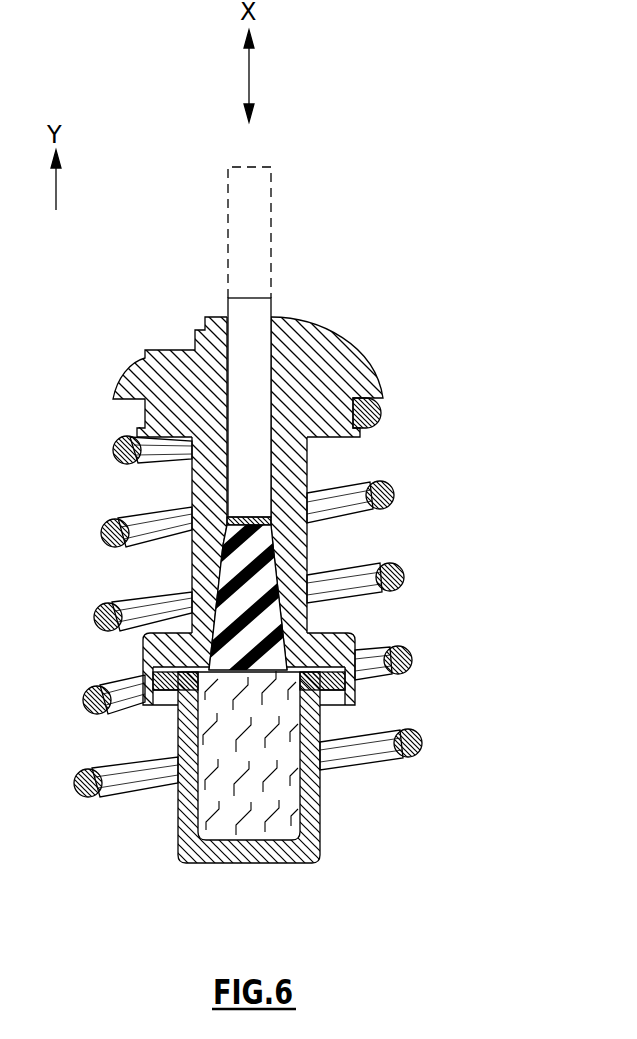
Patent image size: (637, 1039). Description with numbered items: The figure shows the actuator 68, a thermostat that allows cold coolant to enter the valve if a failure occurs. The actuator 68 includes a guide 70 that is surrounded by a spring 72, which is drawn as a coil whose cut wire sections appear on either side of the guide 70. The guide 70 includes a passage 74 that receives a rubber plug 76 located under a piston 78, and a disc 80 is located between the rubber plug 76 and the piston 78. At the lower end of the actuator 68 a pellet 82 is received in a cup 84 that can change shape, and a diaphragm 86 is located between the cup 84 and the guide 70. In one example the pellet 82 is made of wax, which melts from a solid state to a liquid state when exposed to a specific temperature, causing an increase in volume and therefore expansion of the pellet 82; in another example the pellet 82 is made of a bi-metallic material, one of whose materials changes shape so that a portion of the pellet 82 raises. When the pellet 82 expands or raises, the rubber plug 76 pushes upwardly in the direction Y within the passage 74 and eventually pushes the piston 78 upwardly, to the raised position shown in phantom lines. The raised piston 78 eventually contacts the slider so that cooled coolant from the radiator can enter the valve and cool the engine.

The actuator 68 is at (413, 202).
The guide 70 is at (338, 358).
The spring 72 is at (345, 507).
The passage 74 is at (263, 483).
The rubber plug 76 is at (270, 623).
The piston 78 is at (250, 195).
The disc 80 is at (240, 516).
The pellet 82 is at (293, 817).
The cup 84 is at (203, 817).
The diaphragm 86 is at (165, 658).